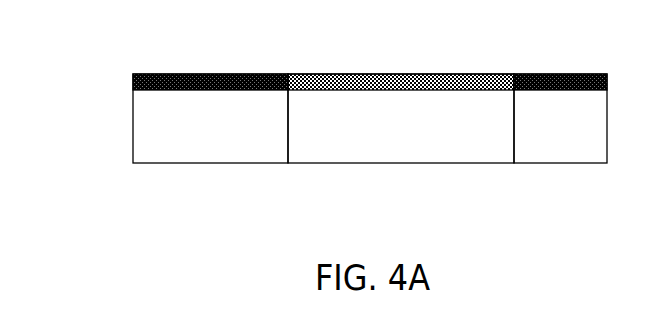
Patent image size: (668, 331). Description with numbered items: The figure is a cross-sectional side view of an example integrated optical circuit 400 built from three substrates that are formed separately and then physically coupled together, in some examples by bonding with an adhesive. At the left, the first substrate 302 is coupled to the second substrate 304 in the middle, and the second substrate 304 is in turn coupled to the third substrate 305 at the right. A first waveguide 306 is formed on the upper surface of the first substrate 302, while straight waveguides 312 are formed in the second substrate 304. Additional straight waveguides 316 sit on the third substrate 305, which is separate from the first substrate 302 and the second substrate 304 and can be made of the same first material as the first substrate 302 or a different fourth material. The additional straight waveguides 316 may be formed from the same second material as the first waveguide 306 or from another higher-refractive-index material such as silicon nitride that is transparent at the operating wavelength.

The integrated optical circuit 400 is at (106, 85).
The first substrate 302 is at (148, 164).
The second substrate 304 is at (448, 164).
The third substrate 305 is at (558, 164).
The first waveguide 306 is at (210, 73).
The straight waveguides 312 is at (448, 75).
The additional straight waveguides 316 is at (570, 73).